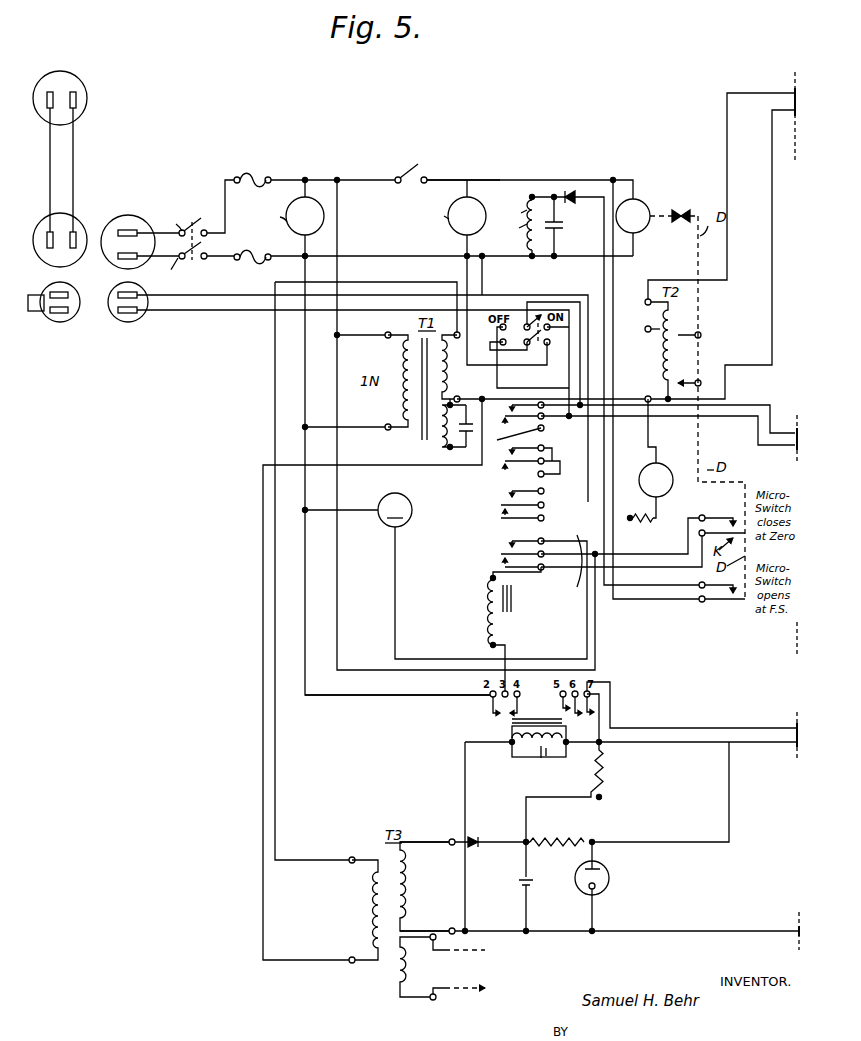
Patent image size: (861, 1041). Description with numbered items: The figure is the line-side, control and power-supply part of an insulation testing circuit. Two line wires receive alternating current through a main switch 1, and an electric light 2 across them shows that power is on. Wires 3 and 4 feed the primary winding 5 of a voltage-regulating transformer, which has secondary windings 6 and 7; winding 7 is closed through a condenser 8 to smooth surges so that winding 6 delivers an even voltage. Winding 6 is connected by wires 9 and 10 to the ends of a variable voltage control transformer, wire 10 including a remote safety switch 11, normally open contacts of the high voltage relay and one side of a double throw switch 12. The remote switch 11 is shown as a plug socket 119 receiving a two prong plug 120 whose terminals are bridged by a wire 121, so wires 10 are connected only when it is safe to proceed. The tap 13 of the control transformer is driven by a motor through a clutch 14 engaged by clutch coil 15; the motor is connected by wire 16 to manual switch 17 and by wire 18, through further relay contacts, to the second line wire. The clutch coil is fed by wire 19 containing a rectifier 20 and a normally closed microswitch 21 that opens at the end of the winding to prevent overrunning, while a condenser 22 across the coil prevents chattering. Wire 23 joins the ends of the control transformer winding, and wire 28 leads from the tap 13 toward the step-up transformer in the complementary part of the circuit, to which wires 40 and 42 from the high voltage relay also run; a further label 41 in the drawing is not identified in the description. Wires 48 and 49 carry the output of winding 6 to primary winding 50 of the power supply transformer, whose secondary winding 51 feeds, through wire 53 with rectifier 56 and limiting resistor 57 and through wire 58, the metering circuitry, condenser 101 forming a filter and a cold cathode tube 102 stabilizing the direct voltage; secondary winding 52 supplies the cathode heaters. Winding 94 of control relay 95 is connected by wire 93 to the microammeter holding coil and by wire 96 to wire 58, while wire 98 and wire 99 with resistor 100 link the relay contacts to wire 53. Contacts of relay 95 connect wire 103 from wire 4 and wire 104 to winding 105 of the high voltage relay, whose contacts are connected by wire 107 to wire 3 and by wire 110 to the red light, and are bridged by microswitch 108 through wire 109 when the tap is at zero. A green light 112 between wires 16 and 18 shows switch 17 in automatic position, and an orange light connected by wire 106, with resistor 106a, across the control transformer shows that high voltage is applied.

The main switch 1 is at (208, 221).
The electric light 2 is at (279, 218).
The wire 3 is at (340, 266).
The wire 4 is at (301, 266).
The primary winding 5 is at (398, 385).
The secondary winding 6 is at (441, 380).
The secondary winding 7 is at (435, 450).
The condenser 8 is at (468, 422).
The wire 9 is at (468, 386).
The wire 10 is at (248, 308).
The remote safety switch 11 is at (96, 313).
The double throw dipolar switch 12 is at (556, 543).
The tap contact 13 is at (682, 335).
The clutch 14 is at (681, 222).
The clutch coil 15 is at (674, 477).
The wire 16 is at (540, 180).
The manually operable switch 17 is at (402, 175).
The wire 18 is at (472, 267).
The wire 19 is at (530, 199).
The rectifier 20 is at (573, 194).
The microswitch 21 is at (720, 602).
The condenser 22 is at (572, 227).
The wire 23 is at (780, 102).
The wire 28 is at (727, 180).
The wire 40 is at (580, 351).
The on-off switch 41 is at (525, 322).
The wire 42 is at (793, 448).
The wire 48 is at (431, 280).
The wire 49 is at (462, 476).
The primary winding 50 is at (368, 896).
The secondary winding 51 is at (411, 899).
The secondary winding 52 is at (393, 975).
The wire 53 is at (425, 839).
The rectifier 56 is at (477, 837).
The limiting resistor 57 is at (561, 840).
The wire 58 is at (703, 928).
The wire 93 is at (756, 742).
The relay winding 94 is at (539, 738).
The control relay 95 is at (508, 746).
The wire 96 is at (463, 763).
The wire 98 is at (666, 728).
The wire 99 is at (603, 714).
The resistor 100 is at (607, 766).
The condenser 101 is at (540, 893).
The cold cathode tube 102 is at (611, 882).
The wire 103 is at (420, 689).
The wire 104 is at (510, 659).
The relay winding 105 is at (490, 611).
The wire 106 is at (667, 508).
The resistor 106a is at (651, 516).
The wire 107 is at (349, 612).
The microswitch 108 is at (734, 517).
The wire 109 is at (666, 565).
The wire 110 is at (370, 492).
The green light 112 is at (444, 218).
The electrical plug socket 119 is at (132, 322).
The two prong plug 120 is at (78, 291).
The wire 121 is at (53, 292).